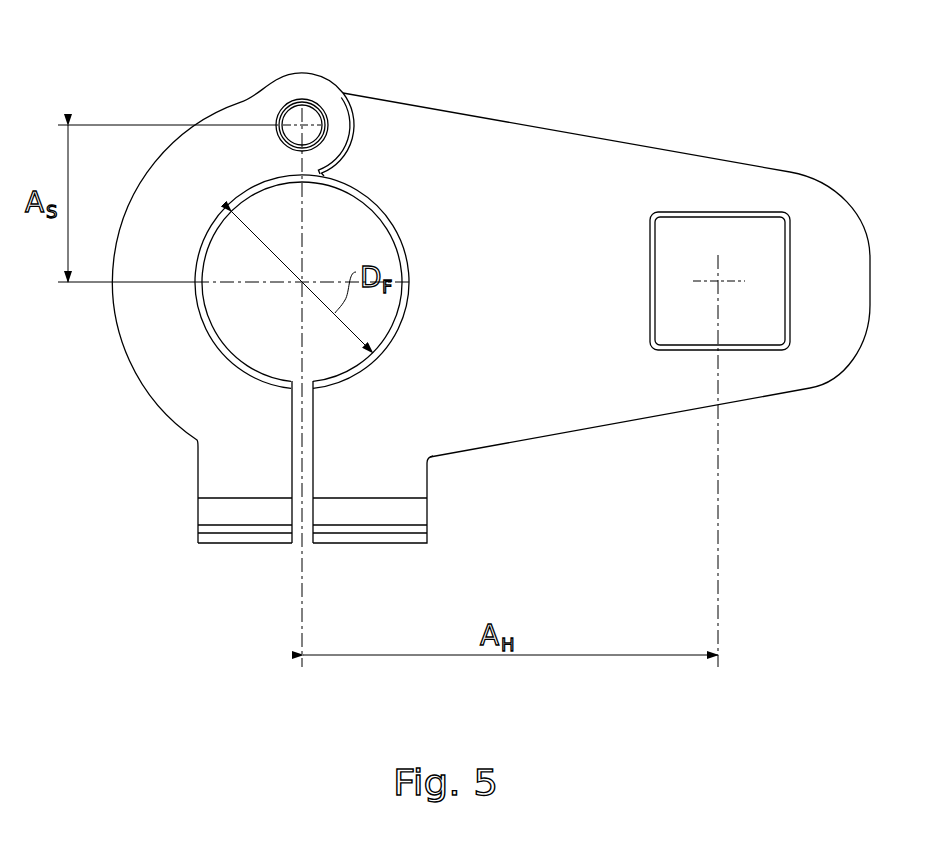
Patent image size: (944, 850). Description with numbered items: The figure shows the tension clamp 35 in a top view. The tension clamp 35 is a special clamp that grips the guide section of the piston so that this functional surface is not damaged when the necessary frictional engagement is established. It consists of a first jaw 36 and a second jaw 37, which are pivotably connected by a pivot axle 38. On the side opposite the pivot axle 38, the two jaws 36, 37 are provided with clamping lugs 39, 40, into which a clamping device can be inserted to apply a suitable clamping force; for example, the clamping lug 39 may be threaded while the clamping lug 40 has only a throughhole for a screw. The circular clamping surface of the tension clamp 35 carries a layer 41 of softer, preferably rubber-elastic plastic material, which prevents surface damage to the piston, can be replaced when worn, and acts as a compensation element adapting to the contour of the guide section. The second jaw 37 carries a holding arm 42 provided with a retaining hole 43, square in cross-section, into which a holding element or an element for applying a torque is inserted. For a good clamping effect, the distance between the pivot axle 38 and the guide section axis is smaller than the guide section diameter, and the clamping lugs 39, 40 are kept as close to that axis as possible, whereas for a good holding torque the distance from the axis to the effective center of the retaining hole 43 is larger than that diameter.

The tension clamp 35 is at (592, 450).
The first jaw 36 is at (132, 320).
The second jaw 37 is at (450, 150).
The pivot axle 38 is at (312, 100).
The clamping lug 39 is at (245, 543).
The clamping lug 40 is at (380, 543).
The layer 41 is at (391, 233).
The holding arm 42 is at (667, 176).
The retaining hole 43 is at (740, 243).